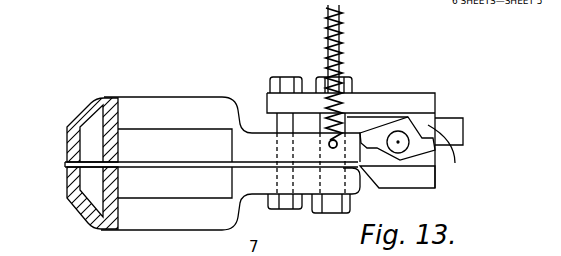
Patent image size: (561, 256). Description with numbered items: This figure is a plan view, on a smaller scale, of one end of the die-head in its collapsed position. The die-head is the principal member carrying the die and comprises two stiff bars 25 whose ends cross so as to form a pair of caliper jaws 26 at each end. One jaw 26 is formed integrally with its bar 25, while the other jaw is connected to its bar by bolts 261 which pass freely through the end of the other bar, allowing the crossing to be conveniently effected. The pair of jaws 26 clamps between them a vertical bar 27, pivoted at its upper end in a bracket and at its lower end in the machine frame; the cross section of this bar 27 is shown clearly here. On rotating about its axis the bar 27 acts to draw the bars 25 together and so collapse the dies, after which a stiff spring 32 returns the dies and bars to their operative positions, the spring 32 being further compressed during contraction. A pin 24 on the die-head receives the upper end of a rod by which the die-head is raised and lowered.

The stiff bar 25 is at (100, 182).
The bolt 261 is at (280, 125).
The stiff spring 32 is at (343, 63).
The vertical bar 27 is at (382, 137).
The pin 24 is at (452, 131).
The caliper jaw 26 is at (435, 178).